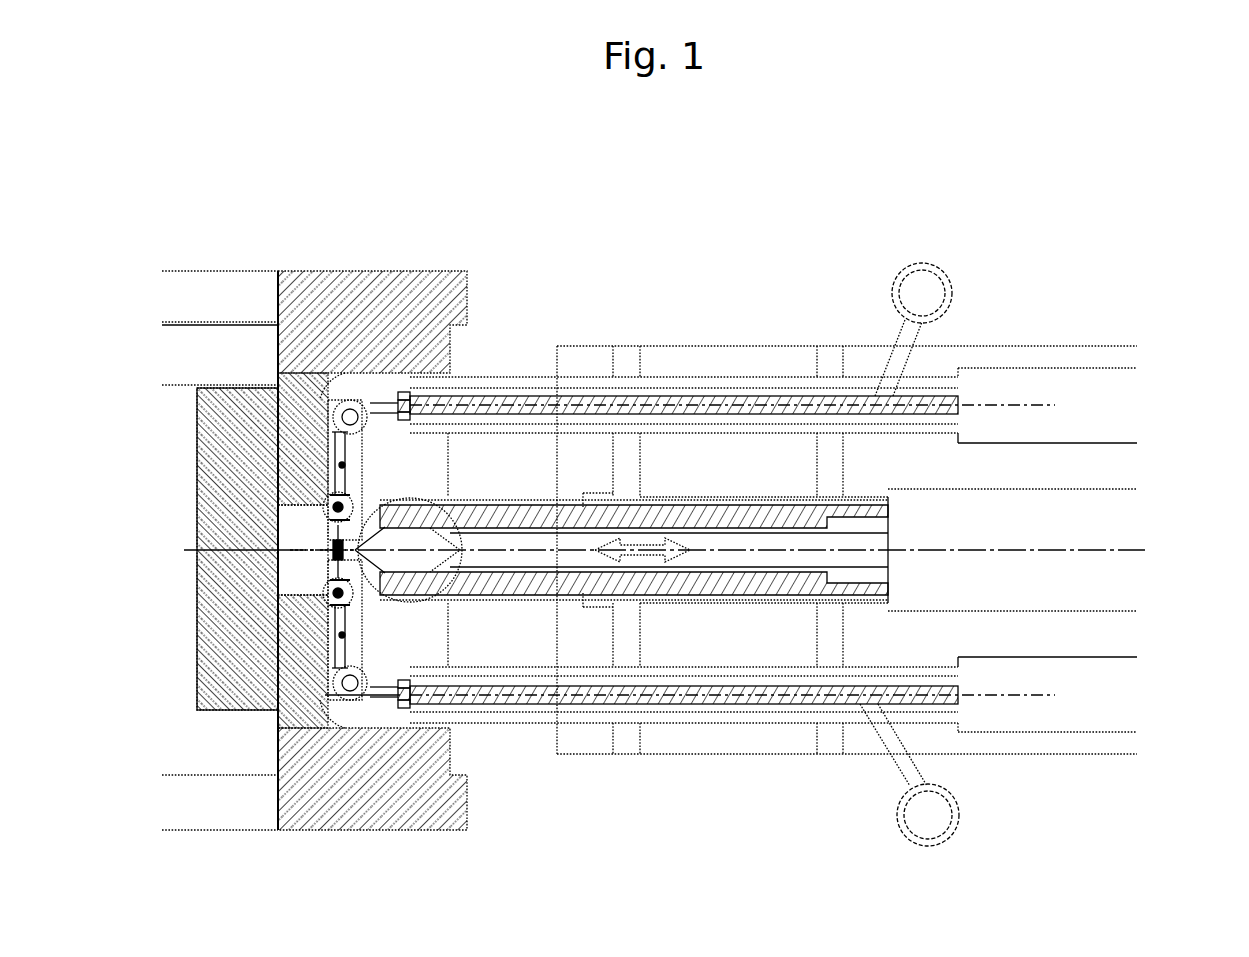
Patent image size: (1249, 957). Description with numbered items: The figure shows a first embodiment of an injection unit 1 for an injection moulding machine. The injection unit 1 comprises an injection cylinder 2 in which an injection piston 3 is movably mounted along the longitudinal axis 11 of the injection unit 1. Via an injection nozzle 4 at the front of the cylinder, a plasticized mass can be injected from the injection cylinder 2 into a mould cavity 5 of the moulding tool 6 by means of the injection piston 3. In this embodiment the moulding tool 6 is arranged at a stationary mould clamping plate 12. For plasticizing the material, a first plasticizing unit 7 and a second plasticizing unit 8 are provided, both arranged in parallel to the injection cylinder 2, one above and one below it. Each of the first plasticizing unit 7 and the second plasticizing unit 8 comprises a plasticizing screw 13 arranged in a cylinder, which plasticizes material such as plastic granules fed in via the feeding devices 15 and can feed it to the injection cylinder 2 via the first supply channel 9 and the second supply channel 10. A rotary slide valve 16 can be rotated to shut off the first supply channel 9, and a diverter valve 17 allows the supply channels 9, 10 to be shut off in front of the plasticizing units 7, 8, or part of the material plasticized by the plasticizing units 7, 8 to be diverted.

The injection unit 1 is at (443, 195).
The injection cylinder 2 is at (480, 515).
The injection piston 3 is at (590, 556).
The injection nozzle 4 is at (372, 565).
The mould cavity 5 is at (183, 575).
The moulding tool 6 is at (245, 400).
The first plasticizing unit 7 is at (640, 385).
The second plasticizing unit 8 is at (735, 716).
The first supply channel 9 is at (378, 400).
The second supply channel 10 is at (378, 696).
The longitudinal axis 11 is at (1120, 550).
The stationary mould clamping plate 12 is at (400, 792).
The plasticizing screw 13 is at (780, 400).
The feeding device 15 is at (935, 295).
The rotary slide valve 16 is at (360, 498).
The diverter valve 17 is at (330, 593).